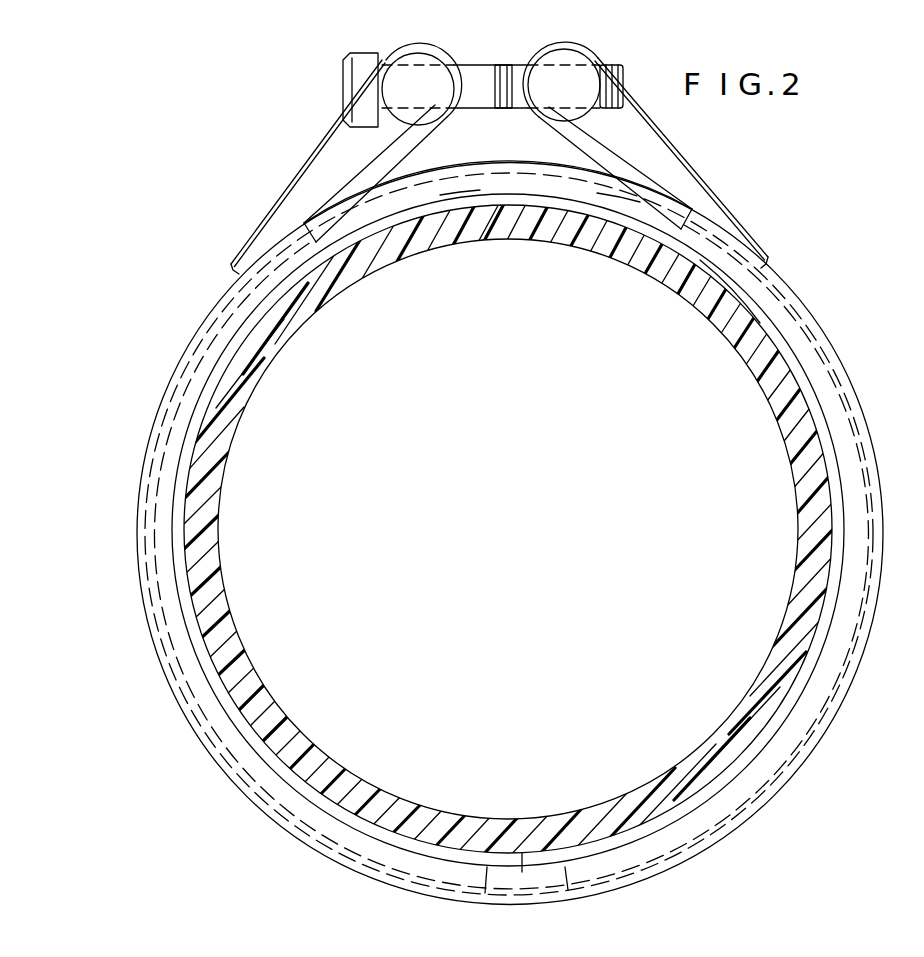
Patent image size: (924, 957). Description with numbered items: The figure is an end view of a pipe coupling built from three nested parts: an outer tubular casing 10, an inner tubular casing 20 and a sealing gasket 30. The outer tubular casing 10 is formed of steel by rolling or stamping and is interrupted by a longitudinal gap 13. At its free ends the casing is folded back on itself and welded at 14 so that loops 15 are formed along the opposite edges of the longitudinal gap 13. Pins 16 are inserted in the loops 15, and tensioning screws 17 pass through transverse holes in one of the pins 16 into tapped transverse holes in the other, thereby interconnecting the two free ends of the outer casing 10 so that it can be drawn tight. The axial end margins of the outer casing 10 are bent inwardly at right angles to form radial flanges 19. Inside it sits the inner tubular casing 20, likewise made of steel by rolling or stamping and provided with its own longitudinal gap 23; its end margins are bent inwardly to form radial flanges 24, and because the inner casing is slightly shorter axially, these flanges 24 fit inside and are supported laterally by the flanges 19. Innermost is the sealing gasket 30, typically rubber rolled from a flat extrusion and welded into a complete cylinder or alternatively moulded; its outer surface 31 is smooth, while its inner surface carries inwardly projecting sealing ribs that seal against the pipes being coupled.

The outer tubular casing 10 is at (830, 724).
The longitudinal gap 13 is at (440, 192).
The weld 14 is at (232, 264).
The loops 15 is at (299, 169).
The pins 16 is at (545, 74).
The tensioning screws 17 is at (345, 76).
The radial flanges 19 is at (232, 742).
The inner tubular casing 20 is at (498, 186).
The longitudinal gap 23 is at (518, 850).
The radial flanges 24 is at (597, 193).
The sealing gasket 30 is at (819, 490).
The outer surface 31 is at (760, 323).